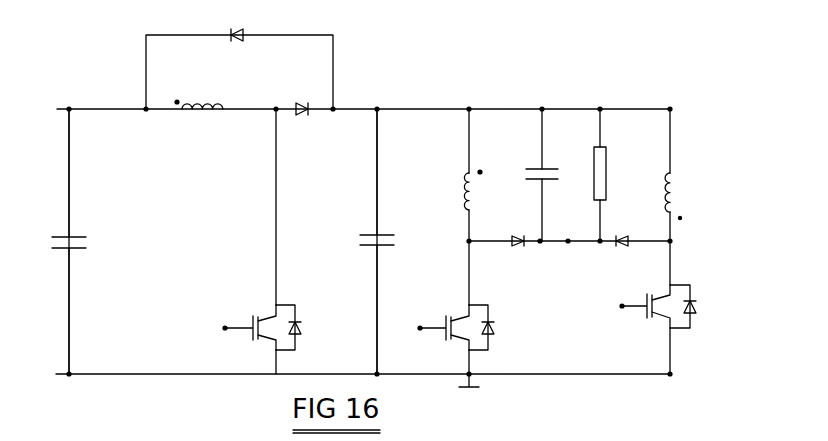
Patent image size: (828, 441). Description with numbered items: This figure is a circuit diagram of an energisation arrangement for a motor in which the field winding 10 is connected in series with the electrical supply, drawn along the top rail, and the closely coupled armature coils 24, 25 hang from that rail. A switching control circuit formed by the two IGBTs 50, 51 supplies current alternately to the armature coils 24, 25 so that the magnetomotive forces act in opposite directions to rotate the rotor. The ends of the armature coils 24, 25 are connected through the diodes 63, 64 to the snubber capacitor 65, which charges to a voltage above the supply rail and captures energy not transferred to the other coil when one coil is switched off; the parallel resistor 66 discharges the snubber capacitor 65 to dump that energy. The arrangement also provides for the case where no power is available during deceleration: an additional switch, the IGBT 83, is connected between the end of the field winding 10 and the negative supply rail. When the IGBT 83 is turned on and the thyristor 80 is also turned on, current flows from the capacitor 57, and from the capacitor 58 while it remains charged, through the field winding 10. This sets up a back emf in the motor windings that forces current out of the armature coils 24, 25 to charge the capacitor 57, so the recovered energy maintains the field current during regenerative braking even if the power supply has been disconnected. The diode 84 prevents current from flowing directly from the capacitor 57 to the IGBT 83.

The field winding 10 is at (198, 113).
The thyristor 80 is at (241, 40).
The diode 84 is at (298, 114).
The capacitor 58 is at (73, 250).
The capacitor 57 is at (372, 233).
The IGBT 83 is at (252, 320).
The IGBT 50 is at (445, 320).
The IGBT 51 is at (645, 316).
The armature coil 24 is at (466, 200).
The snubber capacitor 65 is at (538, 169).
The parallel resistor 66 is at (608, 173).
The armature coil 25 is at (673, 186).
The diode 63 is at (520, 246).
The diode 64 is at (619, 246).